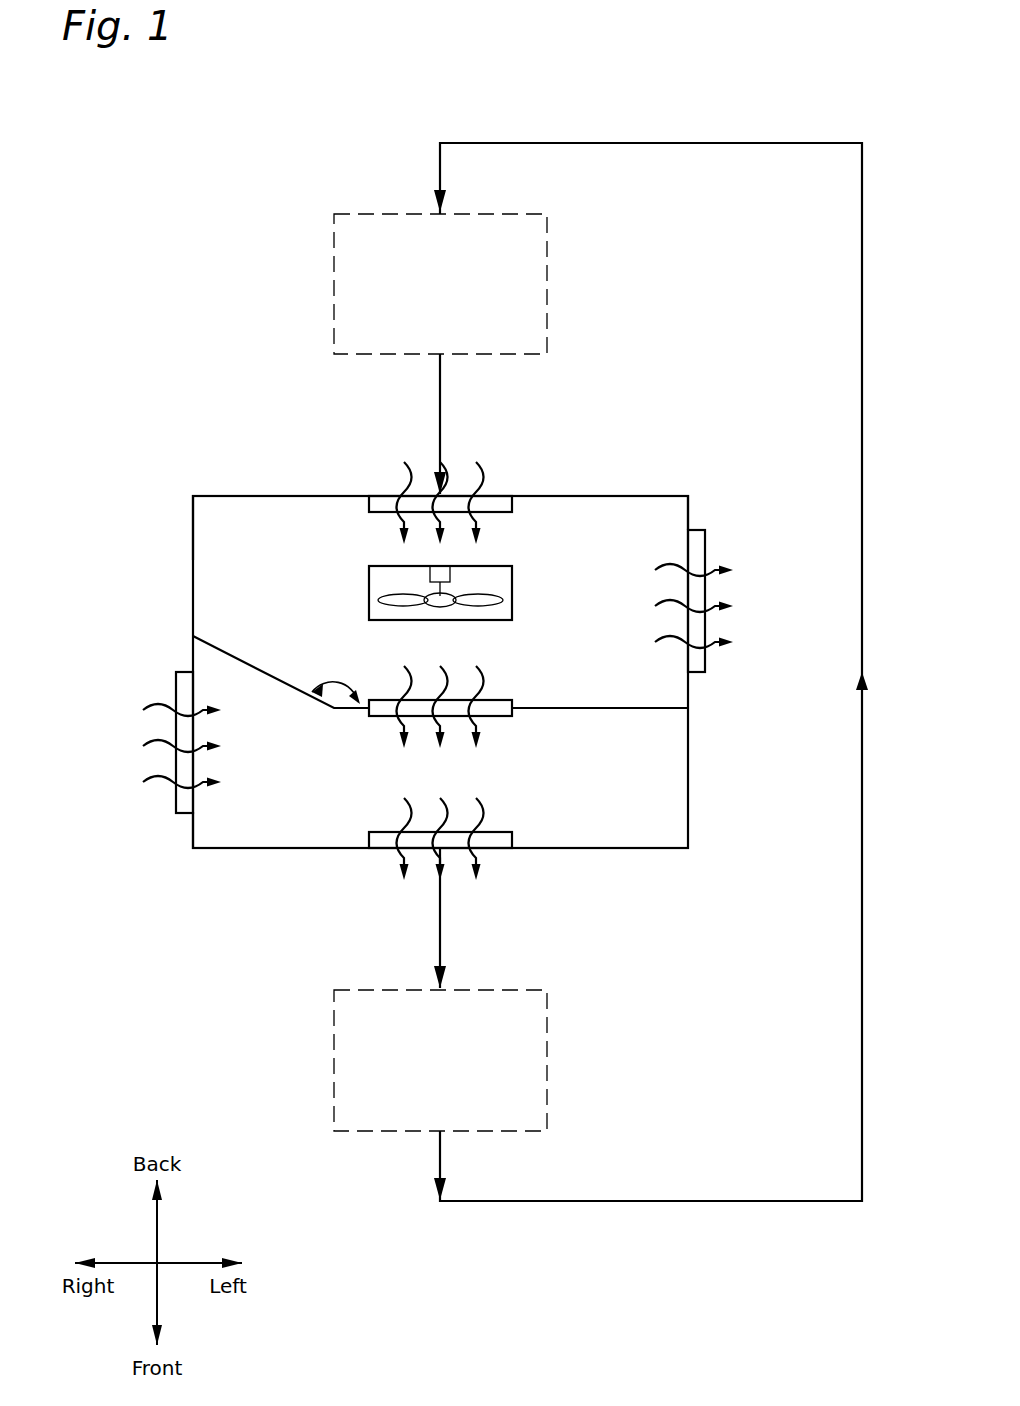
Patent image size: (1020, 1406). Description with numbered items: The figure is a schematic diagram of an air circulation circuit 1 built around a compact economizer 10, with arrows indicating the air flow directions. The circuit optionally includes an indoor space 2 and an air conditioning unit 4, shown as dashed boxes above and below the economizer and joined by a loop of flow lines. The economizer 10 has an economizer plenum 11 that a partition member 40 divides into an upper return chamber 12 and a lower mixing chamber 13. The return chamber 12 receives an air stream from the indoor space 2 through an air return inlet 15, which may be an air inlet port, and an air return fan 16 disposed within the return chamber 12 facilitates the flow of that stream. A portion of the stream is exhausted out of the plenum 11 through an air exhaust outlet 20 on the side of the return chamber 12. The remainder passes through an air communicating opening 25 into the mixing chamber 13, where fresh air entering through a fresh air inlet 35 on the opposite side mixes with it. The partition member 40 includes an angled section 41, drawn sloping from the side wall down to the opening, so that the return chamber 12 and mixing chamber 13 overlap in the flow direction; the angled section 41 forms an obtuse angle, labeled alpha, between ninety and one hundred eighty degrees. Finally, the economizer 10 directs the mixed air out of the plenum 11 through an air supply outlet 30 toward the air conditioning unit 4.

The air circulation circuit 1 is at (228, 170).
The indoor space 2 is at (359, 212).
The air conditioning unit 4 is at (358, 1132).
The economizer 10 is at (672, 385).
The economizer plenum 11 is at (610, 495).
The return chamber 12 is at (263, 507).
The mixing chamber 13 is at (275, 830).
The air return inlet 15 is at (497, 492).
The air return fan 16 is at (512, 580).
The air exhaust outlet 20 is at (707, 546).
The air communicating opening 25 is at (497, 700).
The air supply outlet 30 is at (512, 842).
The fresh air inlet 35 is at (175, 680).
The partition member 40 is at (215, 642).
The angled section 41 is at (334, 712).